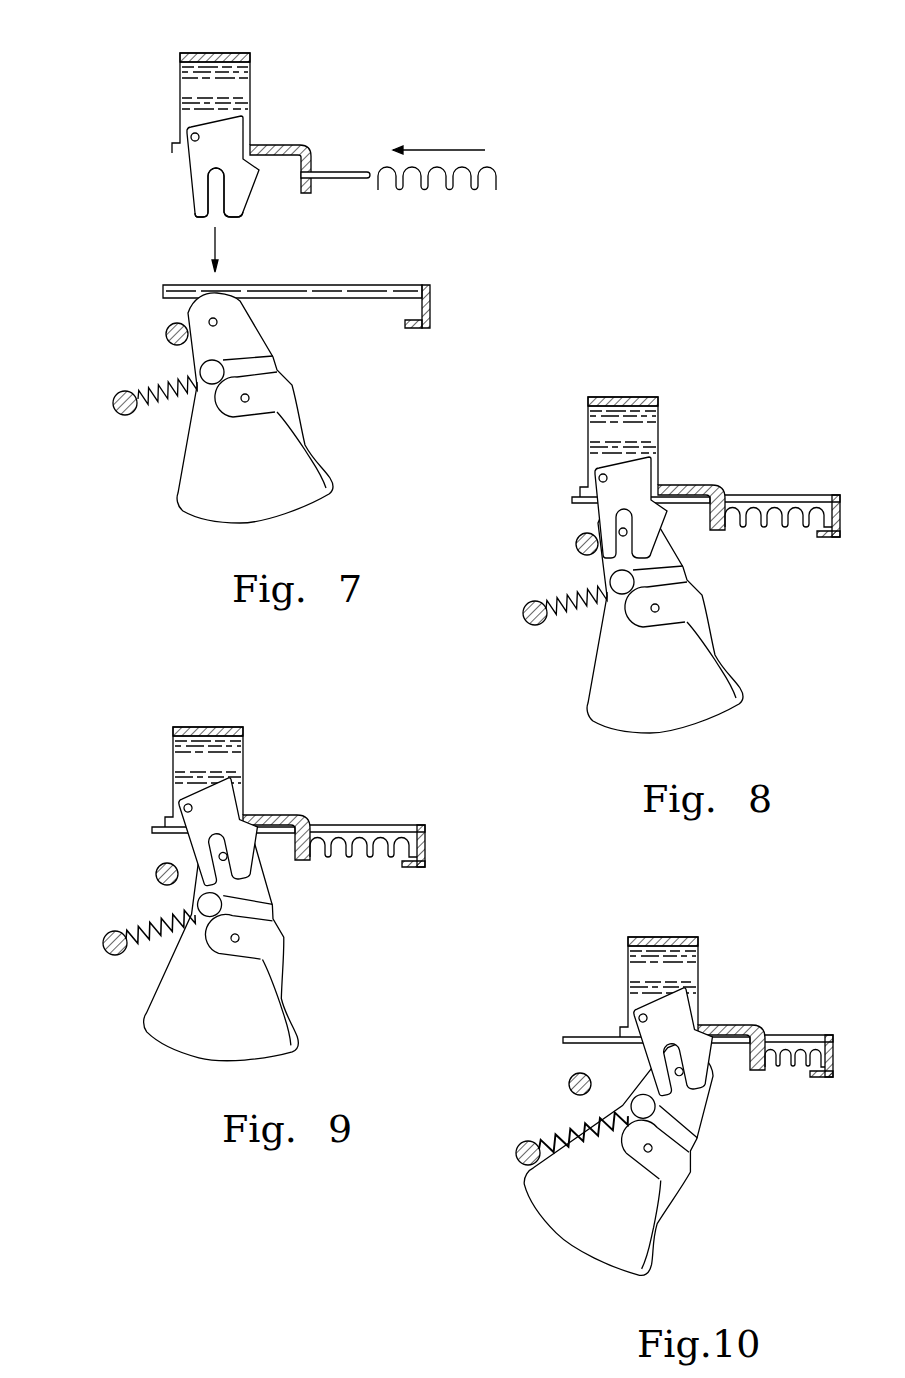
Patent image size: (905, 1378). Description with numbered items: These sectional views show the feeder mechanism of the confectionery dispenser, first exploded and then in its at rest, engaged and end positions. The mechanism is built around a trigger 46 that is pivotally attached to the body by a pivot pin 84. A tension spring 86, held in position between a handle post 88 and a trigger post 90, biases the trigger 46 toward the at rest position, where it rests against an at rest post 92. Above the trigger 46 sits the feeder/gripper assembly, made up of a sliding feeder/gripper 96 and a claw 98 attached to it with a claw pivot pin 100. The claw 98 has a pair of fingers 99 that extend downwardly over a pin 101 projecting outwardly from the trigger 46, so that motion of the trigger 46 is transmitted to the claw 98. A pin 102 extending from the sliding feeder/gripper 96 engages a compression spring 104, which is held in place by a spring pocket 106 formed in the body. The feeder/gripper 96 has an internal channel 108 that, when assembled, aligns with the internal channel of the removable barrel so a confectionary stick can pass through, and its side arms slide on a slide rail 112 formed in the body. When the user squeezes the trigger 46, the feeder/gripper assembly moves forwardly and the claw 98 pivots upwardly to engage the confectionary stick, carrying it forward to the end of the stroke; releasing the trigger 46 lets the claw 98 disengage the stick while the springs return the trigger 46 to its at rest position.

In FIG. 7, the trigger 46 is at (213, 522).
In FIG. 8, the trigger 46 is at (670, 657).
In FIG. 9, the trigger 46 is at (250, 987).
In FIG. 10, the trigger 46 is at (703, 1113).
In FIG. 7, the pivot pin 84 is at (250, 398).
In FIG. 7, the tension spring 86 is at (163, 400).
In FIG. 7, the handle post 88 is at (118, 413).
In FIG. 7, the trigger post 90 is at (224, 368).
In FIG. 7, the at rest post 92 is at (168, 328).
In FIG. 7, the sliding feeder/gripper 96 is at (180, 88).
In FIG. 8, the sliding feeder/gripper 96 is at (687, 483).
In FIG. 9, the sliding feeder/gripper 96 is at (267, 813).
In FIG. 10, the sliding feeder/gripper 96 is at (725, 1022).
In FIG. 7, the claw 98 is at (236, 137).
In FIG. 8, the claw 98 is at (622, 497).
In FIG. 9, the claw 98 is at (202, 825).
In FIG. 10, the claw 98 is at (640, 1050).
In FIG. 7, the fingers 99 is at (237, 207).
In FIG. 7, the claw pivot pin 100 is at (191, 135).
In FIG. 7, the pin 101 is at (218, 319).
In FIG. 7, the pin 102 is at (328, 168).
In FIG. 7, the compression spring 104 is at (423, 192).
In FIG. 7, the spring pocket 106 is at (417, 330).
In FIG. 7, the internal channel 108 is at (235, 88).
In FIG. 7, the slide rail 112 is at (283, 285).